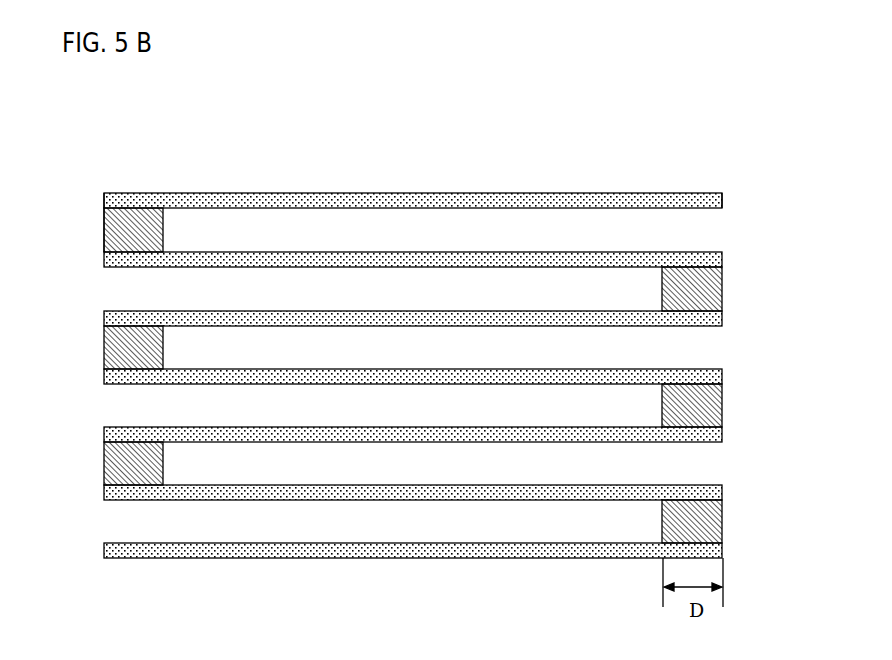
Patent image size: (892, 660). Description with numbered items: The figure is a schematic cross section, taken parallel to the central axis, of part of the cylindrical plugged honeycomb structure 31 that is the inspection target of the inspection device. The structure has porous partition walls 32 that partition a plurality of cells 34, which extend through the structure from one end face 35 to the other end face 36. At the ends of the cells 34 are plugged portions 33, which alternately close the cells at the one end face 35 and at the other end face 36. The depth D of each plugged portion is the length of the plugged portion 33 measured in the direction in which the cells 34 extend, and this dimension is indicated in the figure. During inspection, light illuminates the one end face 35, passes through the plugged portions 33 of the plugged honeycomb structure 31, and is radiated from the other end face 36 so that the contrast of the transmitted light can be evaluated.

The plugged honeycomb structure 31 is at (791, 120).
The porous partition walls 32 is at (451, 192).
The plugged portions 33 is at (722, 288).
The cells 34 is at (693, 463).
The one end face 35 is at (104, 208).
The other end face 36 is at (722, 205).